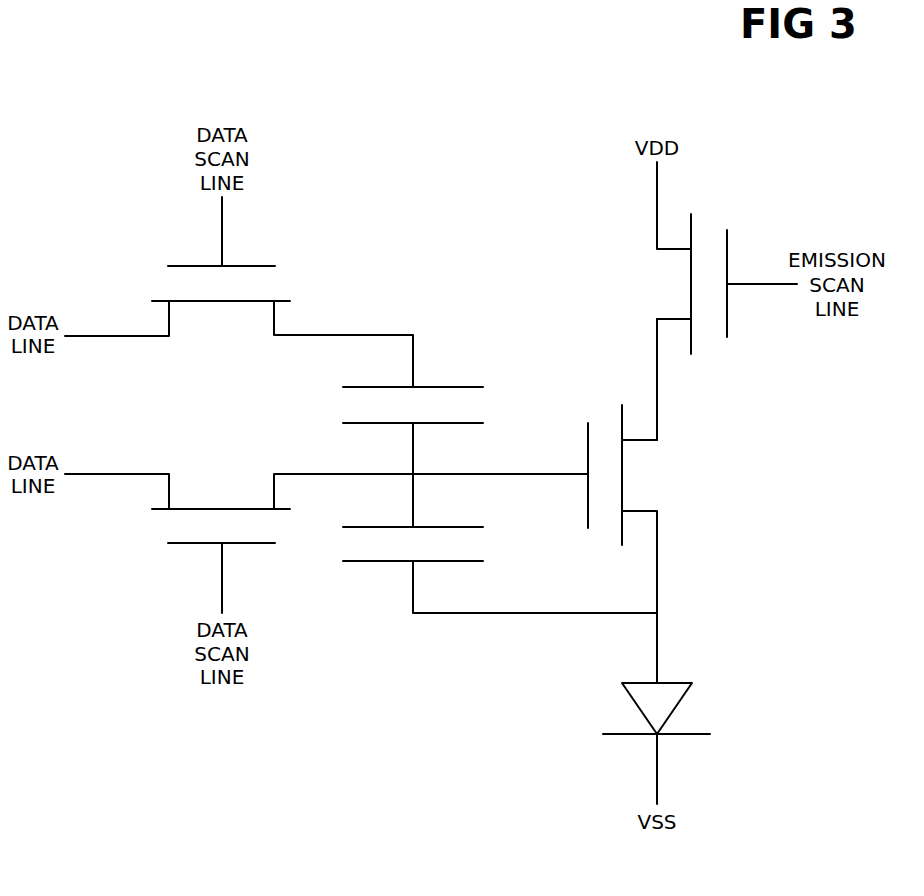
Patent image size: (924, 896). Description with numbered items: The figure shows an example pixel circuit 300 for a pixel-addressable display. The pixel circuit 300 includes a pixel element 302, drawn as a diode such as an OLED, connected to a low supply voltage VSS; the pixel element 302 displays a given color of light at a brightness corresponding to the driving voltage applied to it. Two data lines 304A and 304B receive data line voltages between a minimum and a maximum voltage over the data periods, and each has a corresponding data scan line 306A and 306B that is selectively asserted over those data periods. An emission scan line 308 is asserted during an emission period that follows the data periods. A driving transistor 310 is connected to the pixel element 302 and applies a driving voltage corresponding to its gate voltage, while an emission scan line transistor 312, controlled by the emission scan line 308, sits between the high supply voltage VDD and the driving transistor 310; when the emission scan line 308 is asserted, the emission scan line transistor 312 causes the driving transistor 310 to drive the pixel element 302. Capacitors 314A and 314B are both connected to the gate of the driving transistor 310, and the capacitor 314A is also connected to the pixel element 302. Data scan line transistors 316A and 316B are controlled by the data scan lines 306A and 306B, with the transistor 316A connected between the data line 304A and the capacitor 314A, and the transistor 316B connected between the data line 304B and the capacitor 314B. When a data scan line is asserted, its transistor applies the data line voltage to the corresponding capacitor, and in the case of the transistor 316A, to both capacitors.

The pixel circuit 300 is at (168, 788).
The pixel element 302 is at (675, 702).
The data line 304A is at (100, 474).
The data line 304B is at (107, 336).
The data scan line 306A is at (222, 587).
The data scan line 306B is at (222, 228).
The emission scan line 308 is at (755, 286).
The driving transistor 310 is at (588, 447).
The emission scan line transistor 312 is at (691, 348).
The capacitor 314A is at (475, 561).
The capacitor 314B is at (462, 387).
The data scan line transistor 316A is at (283, 509).
The data scan line transistor 316B is at (283, 301).